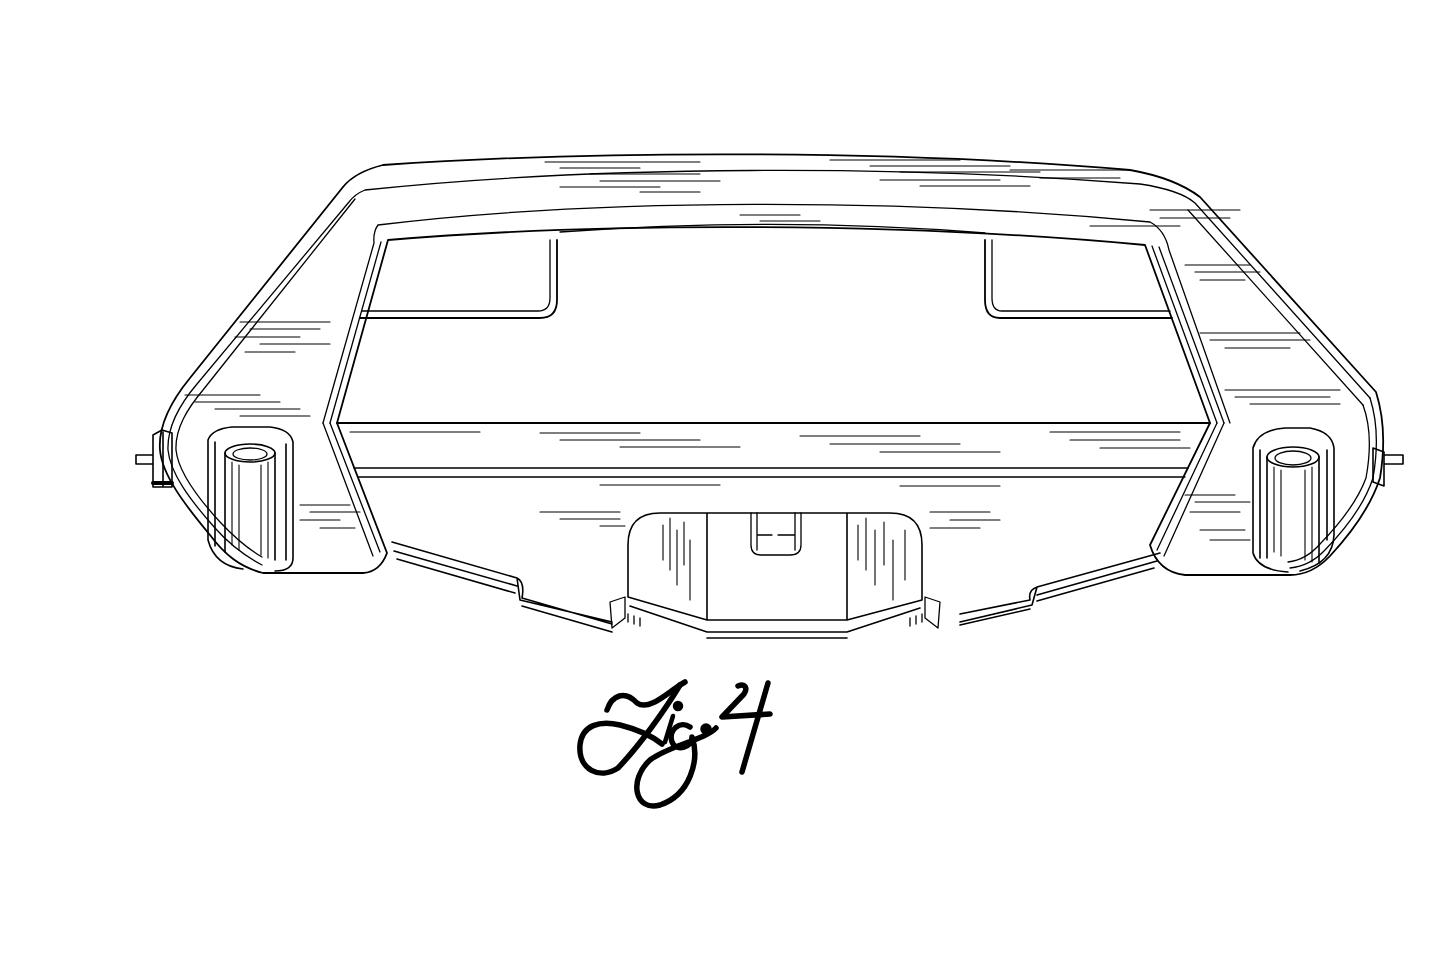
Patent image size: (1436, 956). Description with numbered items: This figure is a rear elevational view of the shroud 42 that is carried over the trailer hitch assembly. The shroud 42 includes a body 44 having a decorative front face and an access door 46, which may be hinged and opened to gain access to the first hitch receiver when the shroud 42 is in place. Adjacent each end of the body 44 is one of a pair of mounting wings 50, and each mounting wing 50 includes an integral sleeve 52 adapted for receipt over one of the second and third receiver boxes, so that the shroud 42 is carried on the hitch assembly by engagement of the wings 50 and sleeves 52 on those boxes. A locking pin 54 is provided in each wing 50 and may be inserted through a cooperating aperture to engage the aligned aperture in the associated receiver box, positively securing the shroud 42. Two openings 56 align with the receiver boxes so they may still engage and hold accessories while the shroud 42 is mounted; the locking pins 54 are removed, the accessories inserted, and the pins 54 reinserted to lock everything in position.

The shroud 42 is at (962, 143).
The body 44 is at (493, 542).
The access door 46 is at (887, 591).
The mounting wing 50 is at (162, 418).
The sleeve 52 is at (252, 528).
The locking pin 54 is at (155, 470).
The opening 56 is at (250, 450).